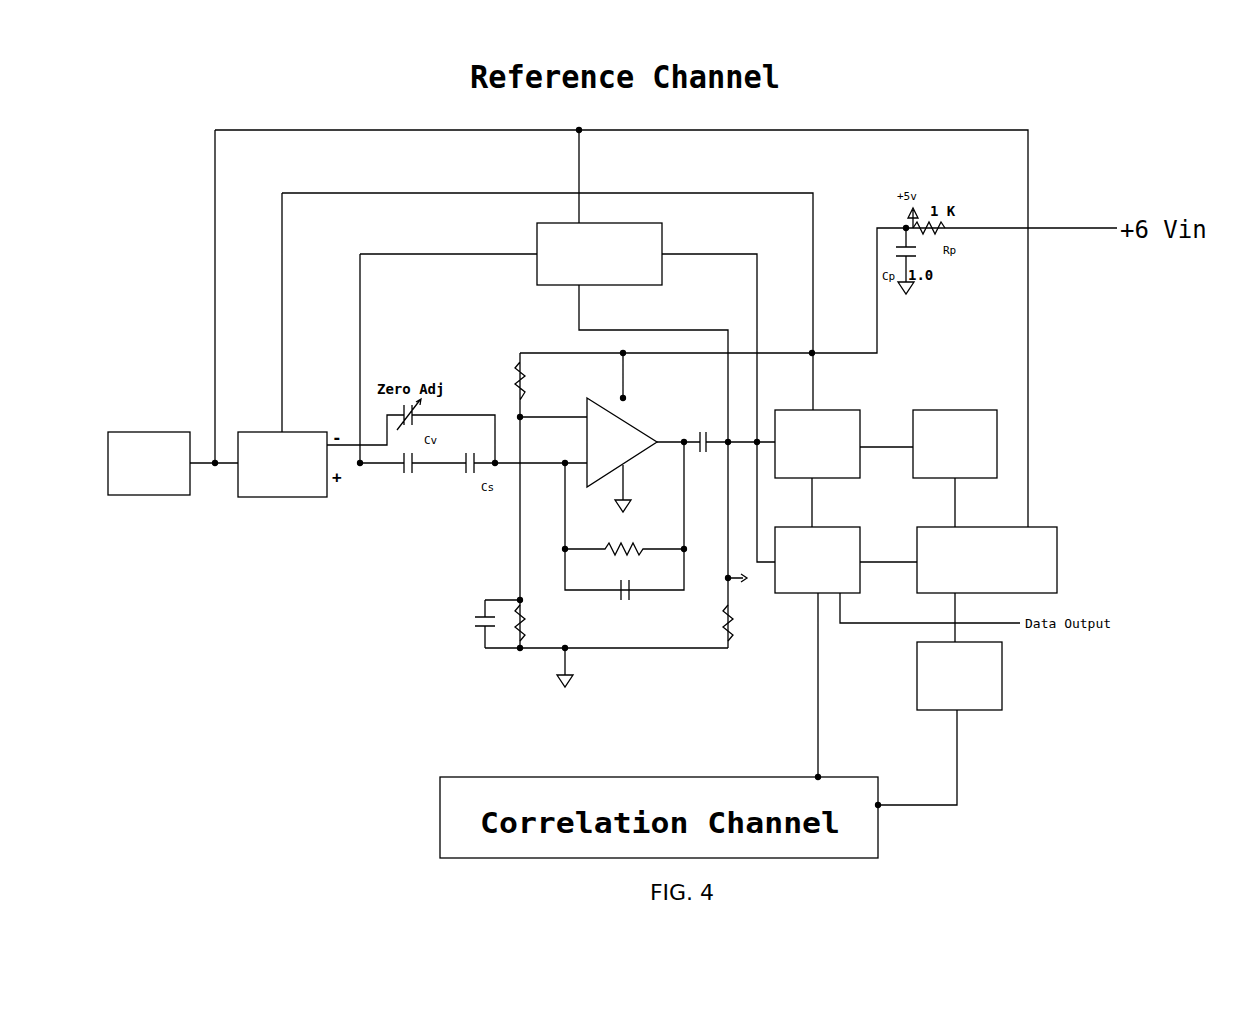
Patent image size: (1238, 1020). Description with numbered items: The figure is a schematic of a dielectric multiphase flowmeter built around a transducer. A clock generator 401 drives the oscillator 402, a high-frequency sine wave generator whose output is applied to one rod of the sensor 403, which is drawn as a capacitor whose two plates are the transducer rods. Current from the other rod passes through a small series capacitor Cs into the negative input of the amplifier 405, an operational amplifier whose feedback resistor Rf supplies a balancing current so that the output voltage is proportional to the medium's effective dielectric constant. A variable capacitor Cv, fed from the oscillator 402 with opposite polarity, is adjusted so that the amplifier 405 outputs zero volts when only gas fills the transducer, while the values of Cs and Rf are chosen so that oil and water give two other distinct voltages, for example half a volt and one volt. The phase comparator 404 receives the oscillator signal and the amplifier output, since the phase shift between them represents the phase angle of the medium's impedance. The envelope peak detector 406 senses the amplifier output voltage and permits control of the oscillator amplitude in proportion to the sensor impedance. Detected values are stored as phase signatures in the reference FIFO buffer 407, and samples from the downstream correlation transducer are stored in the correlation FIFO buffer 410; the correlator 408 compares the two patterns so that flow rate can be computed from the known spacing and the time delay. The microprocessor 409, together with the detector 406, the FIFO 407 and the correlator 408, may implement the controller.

The clock generator 401 is at (190, 496).
The oscillator 402 is at (327, 497).
The sensor 403 is at (413, 506).
The phase comparator 404 is at (662, 230).
The amplifier 405 is at (648, 418).
The envelope peak detector 406 is at (860, 412).
The reference FIFO buffer 407 is at (970, 410).
The correlator 408 is at (1057, 527).
The microprocessor 409 is at (860, 530).
The correlation FIFO buffer 410 is at (1002, 708).